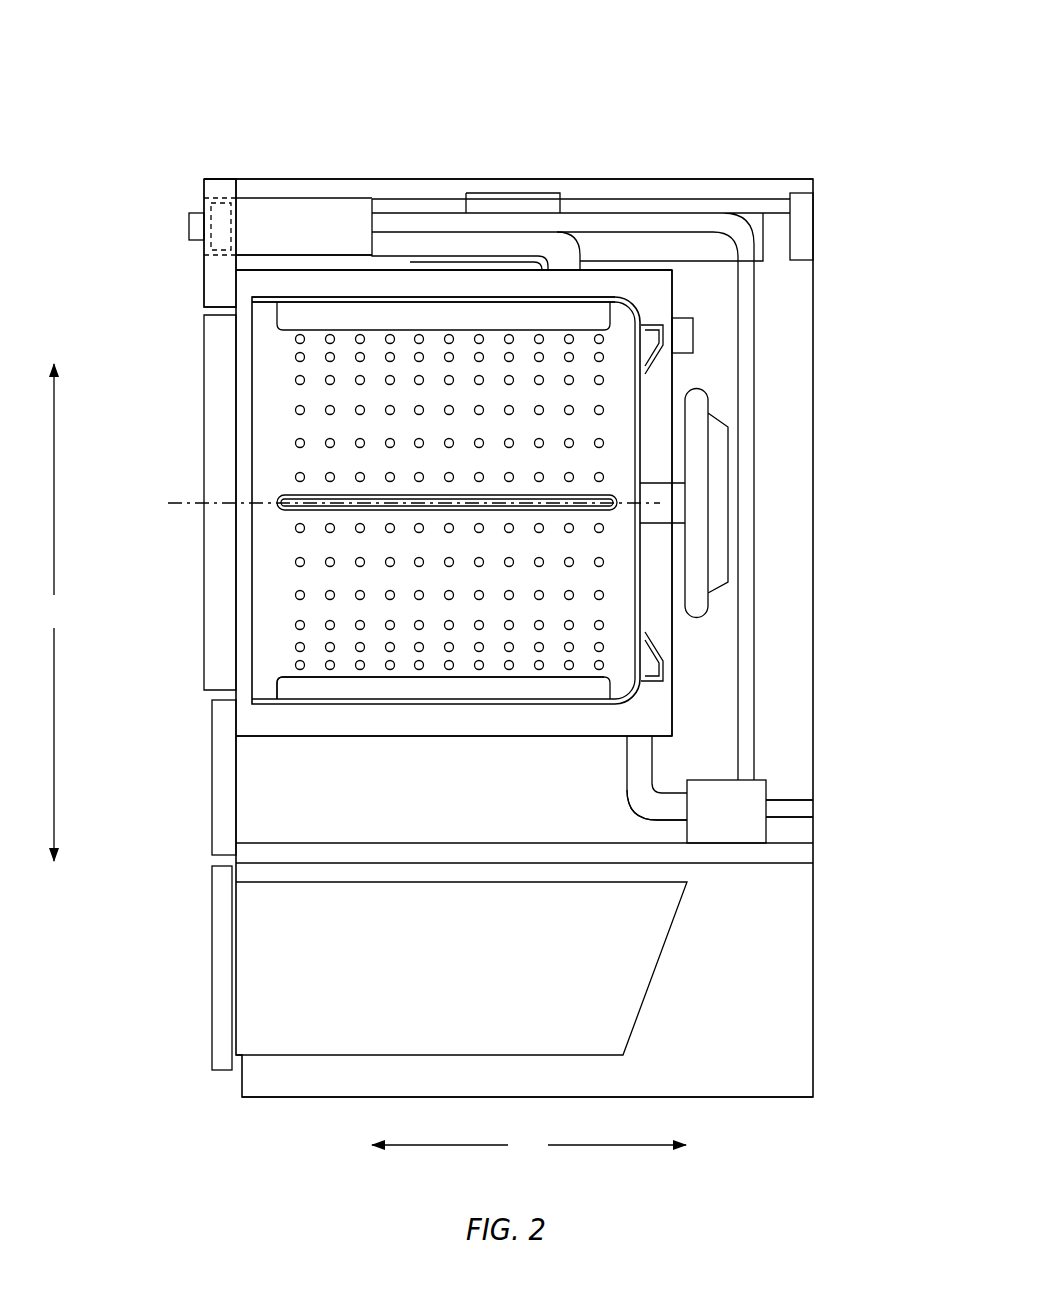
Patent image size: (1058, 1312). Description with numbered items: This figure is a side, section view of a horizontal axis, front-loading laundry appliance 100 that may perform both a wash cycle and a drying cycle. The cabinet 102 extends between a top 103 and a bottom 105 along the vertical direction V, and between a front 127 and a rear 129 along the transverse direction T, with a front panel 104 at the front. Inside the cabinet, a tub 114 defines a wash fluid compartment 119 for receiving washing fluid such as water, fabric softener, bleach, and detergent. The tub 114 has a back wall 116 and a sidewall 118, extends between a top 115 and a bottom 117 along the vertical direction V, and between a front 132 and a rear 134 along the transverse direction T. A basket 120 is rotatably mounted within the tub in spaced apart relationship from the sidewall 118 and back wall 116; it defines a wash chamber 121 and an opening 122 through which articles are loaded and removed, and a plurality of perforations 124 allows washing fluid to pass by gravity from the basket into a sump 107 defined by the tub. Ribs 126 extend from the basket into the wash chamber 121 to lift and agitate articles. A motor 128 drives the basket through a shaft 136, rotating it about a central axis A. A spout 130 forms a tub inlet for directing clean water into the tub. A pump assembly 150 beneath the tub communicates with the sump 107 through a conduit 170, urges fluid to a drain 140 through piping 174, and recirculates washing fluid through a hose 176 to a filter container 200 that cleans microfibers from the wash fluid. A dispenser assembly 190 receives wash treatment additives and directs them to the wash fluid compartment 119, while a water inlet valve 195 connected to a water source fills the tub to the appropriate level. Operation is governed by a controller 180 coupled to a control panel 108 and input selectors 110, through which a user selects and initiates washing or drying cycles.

The laundry appliance 100 is at (231, 62).
The cabinet 102 is at (815, 567).
The top 103 is at (823, 184).
The front panel 104 is at (205, 762).
The bottom 105 is at (826, 1085).
The sump 107 is at (466, 724).
The control panel 108 is at (199, 189).
The input selectors 110 is at (192, 237).
The tub 114 is at (672, 365).
The top 115 is at (353, 268).
The back wall 116 is at (673, 672).
The bottom 117 is at (677, 717).
The sidewall 118 is at (543, 736).
The wash fluid compartment 119 is at (268, 282).
The basket 120 is at (630, 580).
The wash chamber 121 is at (269, 360).
The opening 122 is at (237, 557).
The perforations 124 is at (323, 440).
The ribs 126 is at (297, 689).
The front 127 is at (226, 1092).
The motor 128 is at (693, 470).
The rear 129 is at (795, 1112).
The spout 130 is at (568, 267).
The front 132 is at (249, 264).
The rear 134 is at (661, 261).
The shaft 136 is at (657, 515).
The drain 140 is at (818, 805).
The pump assembly 150 is at (757, 793).
The conduit 170 is at (658, 807).
The piping 174 is at (790, 805).
The hose 176 is at (745, 383).
The controller 180 is at (210, 207).
The dispenser assembly 190 is at (248, 198).
The water inlet valve 195 is at (813, 208).
The filter container 200 is at (331, 223).
The central axis A is at (406, 501).
The vertical direction V is at (54, 612).
The transverse direction T is at (529, 1141).